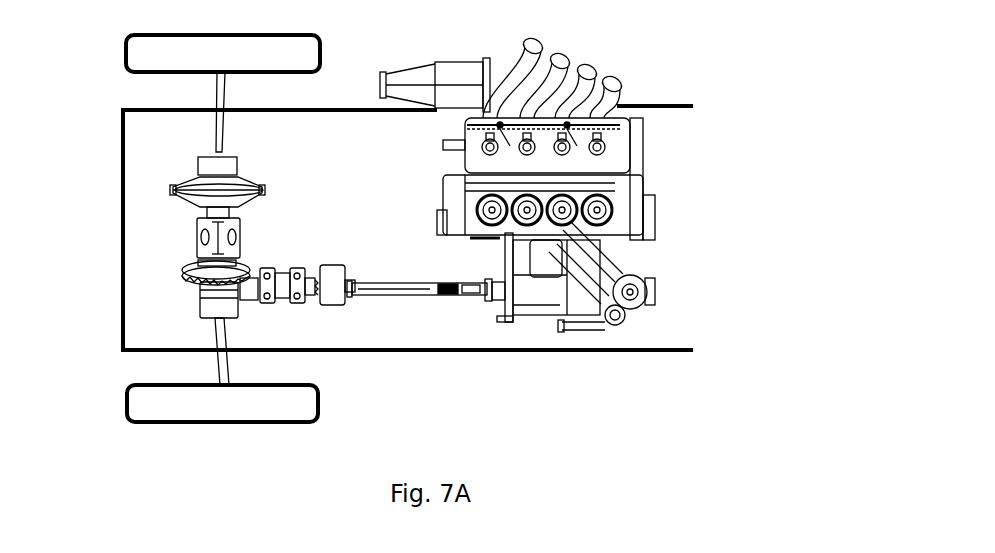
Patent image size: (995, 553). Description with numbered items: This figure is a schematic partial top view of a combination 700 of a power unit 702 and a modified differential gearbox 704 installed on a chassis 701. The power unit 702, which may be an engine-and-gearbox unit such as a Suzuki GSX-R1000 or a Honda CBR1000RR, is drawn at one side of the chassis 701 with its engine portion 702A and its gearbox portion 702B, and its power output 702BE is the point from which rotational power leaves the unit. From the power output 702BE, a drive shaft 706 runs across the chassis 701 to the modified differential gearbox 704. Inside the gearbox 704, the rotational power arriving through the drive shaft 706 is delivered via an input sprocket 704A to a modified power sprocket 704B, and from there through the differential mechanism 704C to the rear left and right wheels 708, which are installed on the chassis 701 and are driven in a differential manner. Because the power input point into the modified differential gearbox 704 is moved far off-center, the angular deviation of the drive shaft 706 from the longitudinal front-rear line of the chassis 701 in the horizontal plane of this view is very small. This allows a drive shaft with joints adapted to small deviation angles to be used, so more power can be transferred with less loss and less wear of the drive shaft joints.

The combination of power unit and modified differential gearbox 700 is at (618, 418).
The chassis 701 is at (118, 325).
The power unit 702 is at (696, 160).
The cylinder head / intake side of engine 702A is at (618, 143).
The transmission 702B is at (537, 288).
The power output of power unit 702BE is at (493, 302).
The modified differential gearbox 704 is at (128, 211).
The input sprocket 704A is at (240, 287).
The modified power sprocket 704B is at (183, 270).
The differential mechanism 704C is at (195, 237).
The drive shaft 706 is at (392, 273).
The rear wheels 708 is at (133, 59).